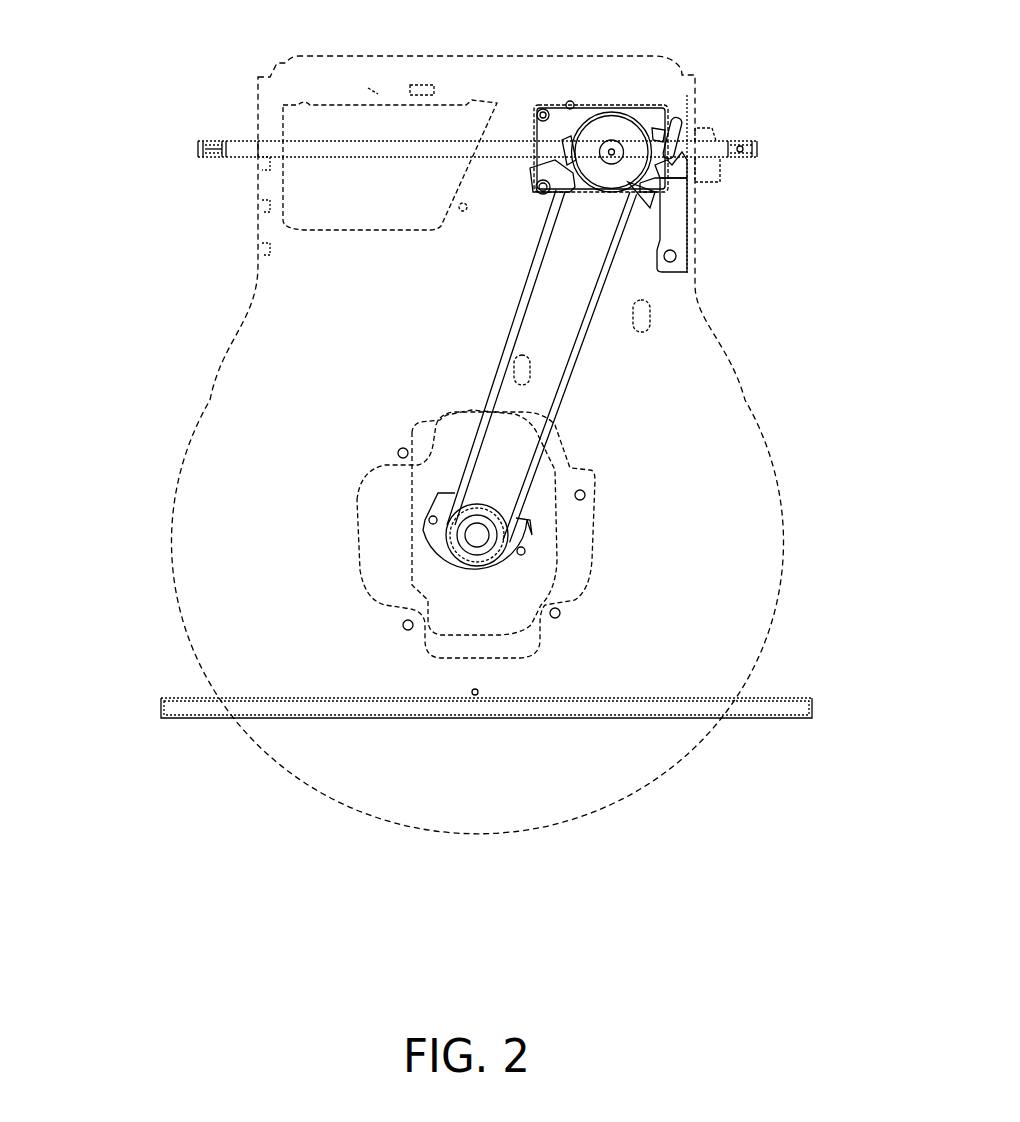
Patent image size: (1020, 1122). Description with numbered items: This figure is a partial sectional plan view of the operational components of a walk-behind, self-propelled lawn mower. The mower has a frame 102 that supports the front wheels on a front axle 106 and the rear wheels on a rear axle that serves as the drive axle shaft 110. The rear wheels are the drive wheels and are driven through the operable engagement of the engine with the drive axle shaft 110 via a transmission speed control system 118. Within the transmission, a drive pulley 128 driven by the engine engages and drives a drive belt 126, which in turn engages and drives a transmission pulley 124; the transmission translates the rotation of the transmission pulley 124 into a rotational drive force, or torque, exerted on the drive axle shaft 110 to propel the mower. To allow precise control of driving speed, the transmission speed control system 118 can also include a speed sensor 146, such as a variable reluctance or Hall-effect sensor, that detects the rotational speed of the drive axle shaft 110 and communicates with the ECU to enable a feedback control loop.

The frame 102 is at (193, 501).
The front axle 106 is at (190, 707).
The drive axle shaft 110 is at (245, 150).
The transmission speed control system 118 is at (693, 93).
The transmission pulley 124 is at (617, 128).
The drive belt 126 is at (582, 339).
The drive pulley 128 is at (492, 527).
The speed sensor 146 is at (720, 168).